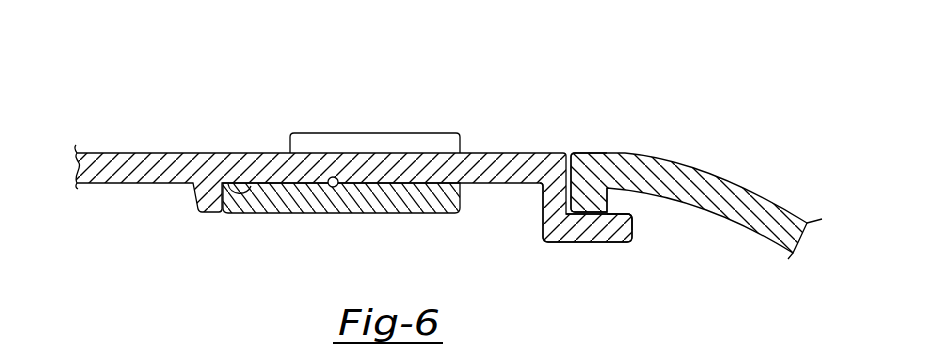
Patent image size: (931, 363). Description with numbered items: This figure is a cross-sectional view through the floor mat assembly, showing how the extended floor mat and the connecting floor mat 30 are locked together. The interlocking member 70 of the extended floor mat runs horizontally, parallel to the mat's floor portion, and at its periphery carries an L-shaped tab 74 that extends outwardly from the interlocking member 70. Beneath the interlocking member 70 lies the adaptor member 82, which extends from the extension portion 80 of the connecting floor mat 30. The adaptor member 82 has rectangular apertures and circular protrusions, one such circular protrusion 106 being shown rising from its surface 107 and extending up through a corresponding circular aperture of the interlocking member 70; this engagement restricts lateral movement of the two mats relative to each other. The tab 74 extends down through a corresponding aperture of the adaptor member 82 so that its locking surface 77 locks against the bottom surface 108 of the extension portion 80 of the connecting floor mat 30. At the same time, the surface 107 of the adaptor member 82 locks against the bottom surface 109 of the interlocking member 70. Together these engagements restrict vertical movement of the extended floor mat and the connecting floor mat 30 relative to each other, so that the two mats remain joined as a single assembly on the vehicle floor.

The connecting floor mat 30 is at (448, 187).
The interlocking member 70 is at (140, 153).
The L-shaped tab 74 is at (592, 261).
The locking surface 77 is at (624, 210).
The extension portion 80 is at (741, 156).
The adaptor member 82 is at (243, 231).
The circular protrusion 106 is at (347, 133).
The surface 107 is at (336, 187).
The bottom surface 108 is at (603, 212).
The bottom surface 109 is at (228, 184).